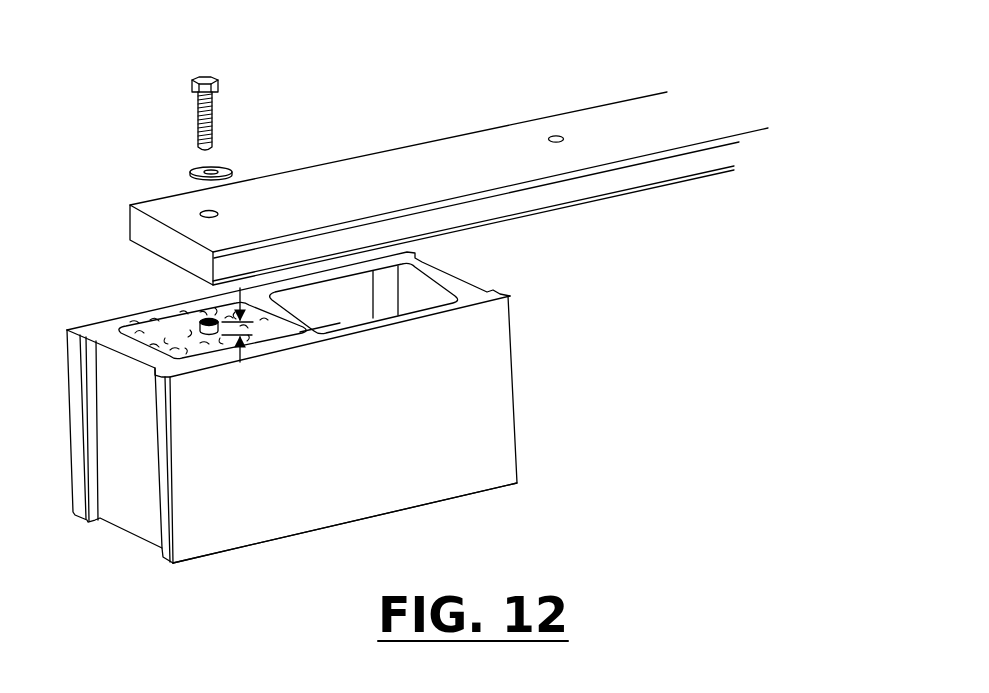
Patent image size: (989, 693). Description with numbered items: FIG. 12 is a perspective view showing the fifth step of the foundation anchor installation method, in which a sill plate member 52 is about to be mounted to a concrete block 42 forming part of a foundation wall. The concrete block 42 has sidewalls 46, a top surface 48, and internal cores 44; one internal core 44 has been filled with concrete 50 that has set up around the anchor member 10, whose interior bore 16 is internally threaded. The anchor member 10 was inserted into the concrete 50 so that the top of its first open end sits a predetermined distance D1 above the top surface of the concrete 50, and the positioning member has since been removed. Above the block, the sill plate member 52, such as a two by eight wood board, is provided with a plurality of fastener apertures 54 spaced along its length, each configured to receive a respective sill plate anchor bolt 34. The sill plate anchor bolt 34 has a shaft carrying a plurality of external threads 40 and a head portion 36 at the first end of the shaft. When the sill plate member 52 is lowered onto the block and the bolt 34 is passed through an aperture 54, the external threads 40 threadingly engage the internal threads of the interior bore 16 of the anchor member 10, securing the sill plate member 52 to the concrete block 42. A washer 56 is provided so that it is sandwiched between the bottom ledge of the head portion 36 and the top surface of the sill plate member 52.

The anchor member 10 is at (205, 338).
The interior bore 16 is at (210, 320).
The sill plate anchor bolt 34 is at (204, 79).
The head portion 36 is at (205, 76).
The external threads 40 is at (213, 126).
The concrete block 42 is at (402, 490).
The internal core 44 is at (388, 293).
The sidewalls 46 is at (497, 397).
The top surface 48 is at (325, 328).
The concrete 50 is at (145, 330).
The sill plate member 52 is at (453, 160).
The fastener apertures 54 is at (218, 210).
The washer 56 is at (188, 173).
The predetermined distance D1 is at (250, 327).